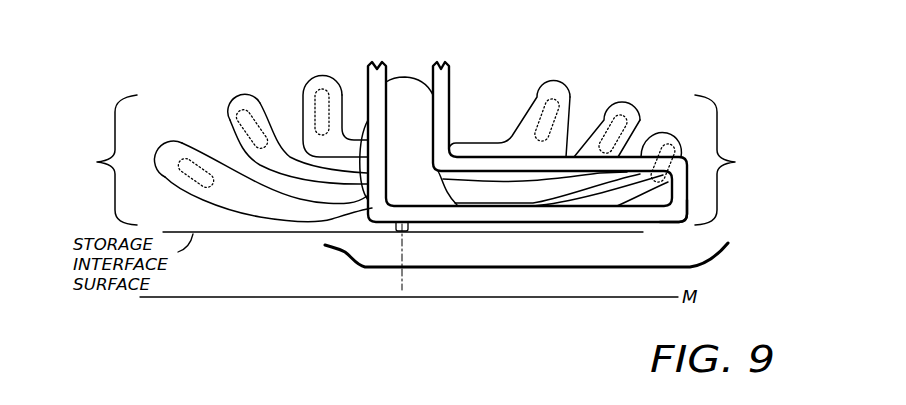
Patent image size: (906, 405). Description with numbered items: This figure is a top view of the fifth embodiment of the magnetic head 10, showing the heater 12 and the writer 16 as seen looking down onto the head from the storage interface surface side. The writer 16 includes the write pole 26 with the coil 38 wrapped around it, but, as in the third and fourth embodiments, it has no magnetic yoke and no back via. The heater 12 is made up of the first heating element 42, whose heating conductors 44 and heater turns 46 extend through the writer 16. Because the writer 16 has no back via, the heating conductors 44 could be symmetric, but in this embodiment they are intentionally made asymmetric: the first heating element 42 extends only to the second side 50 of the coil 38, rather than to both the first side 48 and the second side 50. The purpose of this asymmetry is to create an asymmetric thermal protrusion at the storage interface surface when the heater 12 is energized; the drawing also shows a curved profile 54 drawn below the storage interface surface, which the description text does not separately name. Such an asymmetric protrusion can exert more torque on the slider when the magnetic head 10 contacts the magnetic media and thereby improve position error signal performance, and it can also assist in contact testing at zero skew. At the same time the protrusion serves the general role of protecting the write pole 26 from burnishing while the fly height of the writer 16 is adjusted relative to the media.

The magnetic head 10 is at (621, 71).
The heater 12 is at (443, 93).
The writer 16 is at (649, 95).
The write pole 26 is at (406, 172).
The coil 38 is at (563, 108).
The first heating element 42 is at (540, 213).
The heating conductors 44 is at (615, 210).
The heater turns 46 is at (676, 213).
The first side 48 is at (215, 151).
The second side 50 is at (610, 136).
The curved contact surface 54 is at (335, 252).